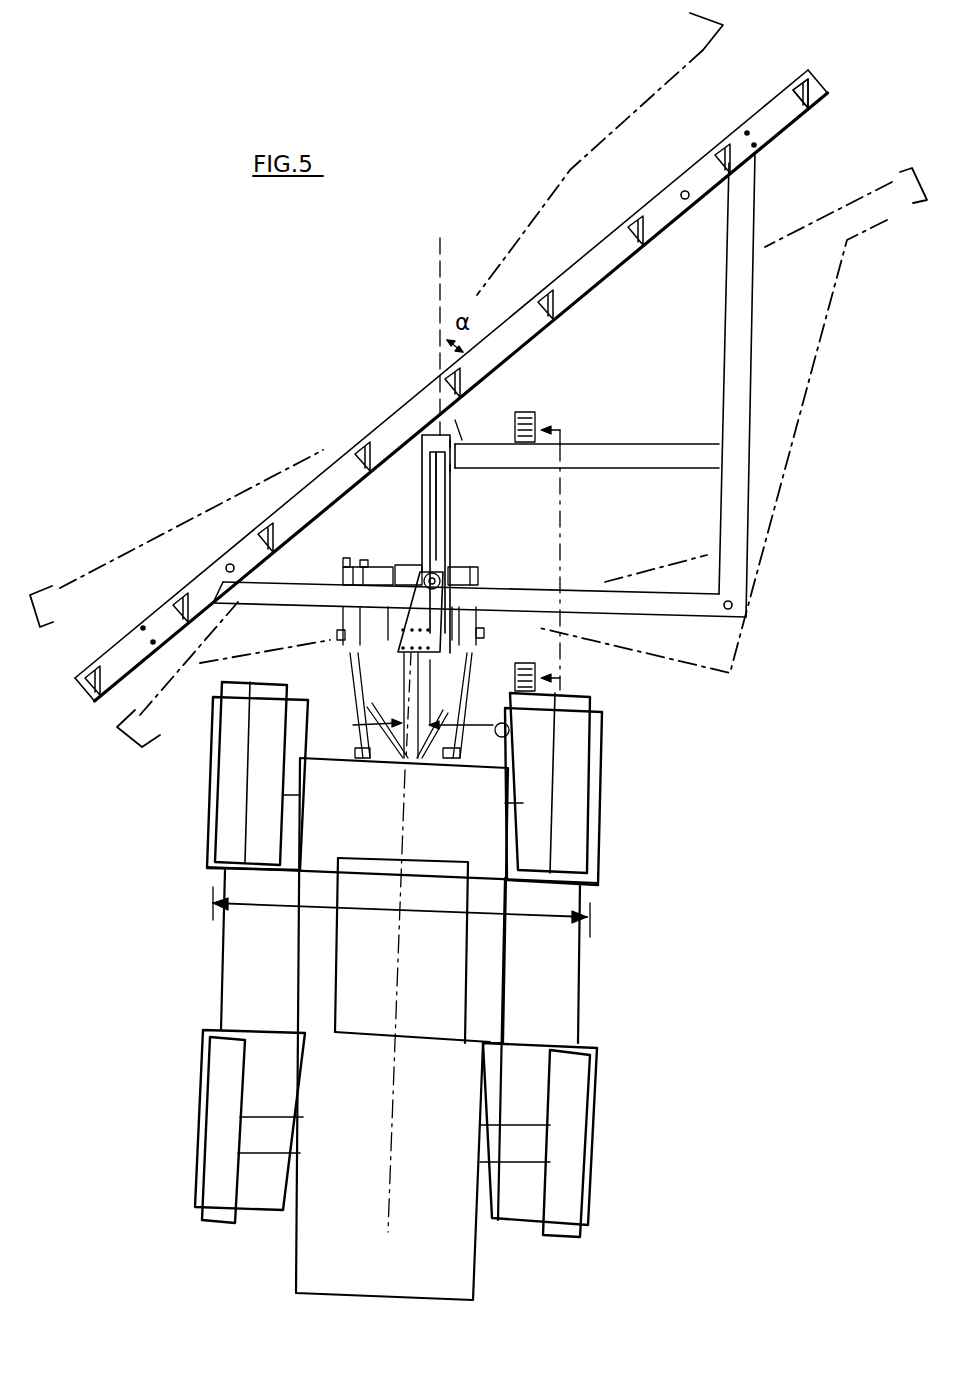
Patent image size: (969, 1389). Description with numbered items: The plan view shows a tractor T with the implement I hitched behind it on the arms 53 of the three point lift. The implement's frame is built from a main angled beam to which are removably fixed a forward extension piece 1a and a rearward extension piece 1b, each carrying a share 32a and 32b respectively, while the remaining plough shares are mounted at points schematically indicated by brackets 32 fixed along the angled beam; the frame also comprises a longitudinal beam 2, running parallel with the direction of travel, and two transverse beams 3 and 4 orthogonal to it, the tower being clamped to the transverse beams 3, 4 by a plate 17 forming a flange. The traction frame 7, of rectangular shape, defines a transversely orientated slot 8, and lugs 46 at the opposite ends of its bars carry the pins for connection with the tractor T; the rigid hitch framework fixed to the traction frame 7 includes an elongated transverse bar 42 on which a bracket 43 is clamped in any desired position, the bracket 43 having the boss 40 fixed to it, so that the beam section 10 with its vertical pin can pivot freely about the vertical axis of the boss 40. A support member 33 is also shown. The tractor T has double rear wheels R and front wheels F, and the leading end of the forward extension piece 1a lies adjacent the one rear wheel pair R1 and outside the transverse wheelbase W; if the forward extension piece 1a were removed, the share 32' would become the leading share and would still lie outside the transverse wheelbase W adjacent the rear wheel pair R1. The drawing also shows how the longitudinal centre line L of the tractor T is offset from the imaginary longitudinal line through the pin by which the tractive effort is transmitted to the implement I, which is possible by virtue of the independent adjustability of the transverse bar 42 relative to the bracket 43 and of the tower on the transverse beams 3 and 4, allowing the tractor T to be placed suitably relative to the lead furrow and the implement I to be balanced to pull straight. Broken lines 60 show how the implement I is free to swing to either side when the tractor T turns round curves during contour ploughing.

The forward extension piece 1a is at (117, 662).
The rearward extension piece 1b is at (777, 108).
The longitudinal beam 2 is at (752, 397).
The transverse beam 3 is at (442, 516).
The transverse beam 4 is at (658, 486).
The traction frame 7 is at (358, 575).
The transversely orientated slot 8 is at (383, 578).
The beam section 10 is at (412, 572).
The plate 17 is at (420, 504).
The brackets 32 is at (512, 315).
The share 32' is at (160, 584).
The share 32a is at (103, 680).
The share 32b is at (816, 100).
The support member 33 is at (458, 420).
The boss 40 is at (440, 570).
The transverse bar 42 is at (380, 653).
The bracket 43 is at (420, 625).
The lugs 46 is at (342, 637).
The arms 53 is at (355, 695).
The broken lines 60 is at (662, 47).
The implement I is at (513, 358).
The rear wheel pair R1 is at (235, 795).
The double rear wheels R is at (570, 815).
The front wheels F is at (575, 1145).
The longitudinal centre line L is at (412, 815).
The transverse wheelbase W is at (401, 907).
The tractor T is at (442, 1025).